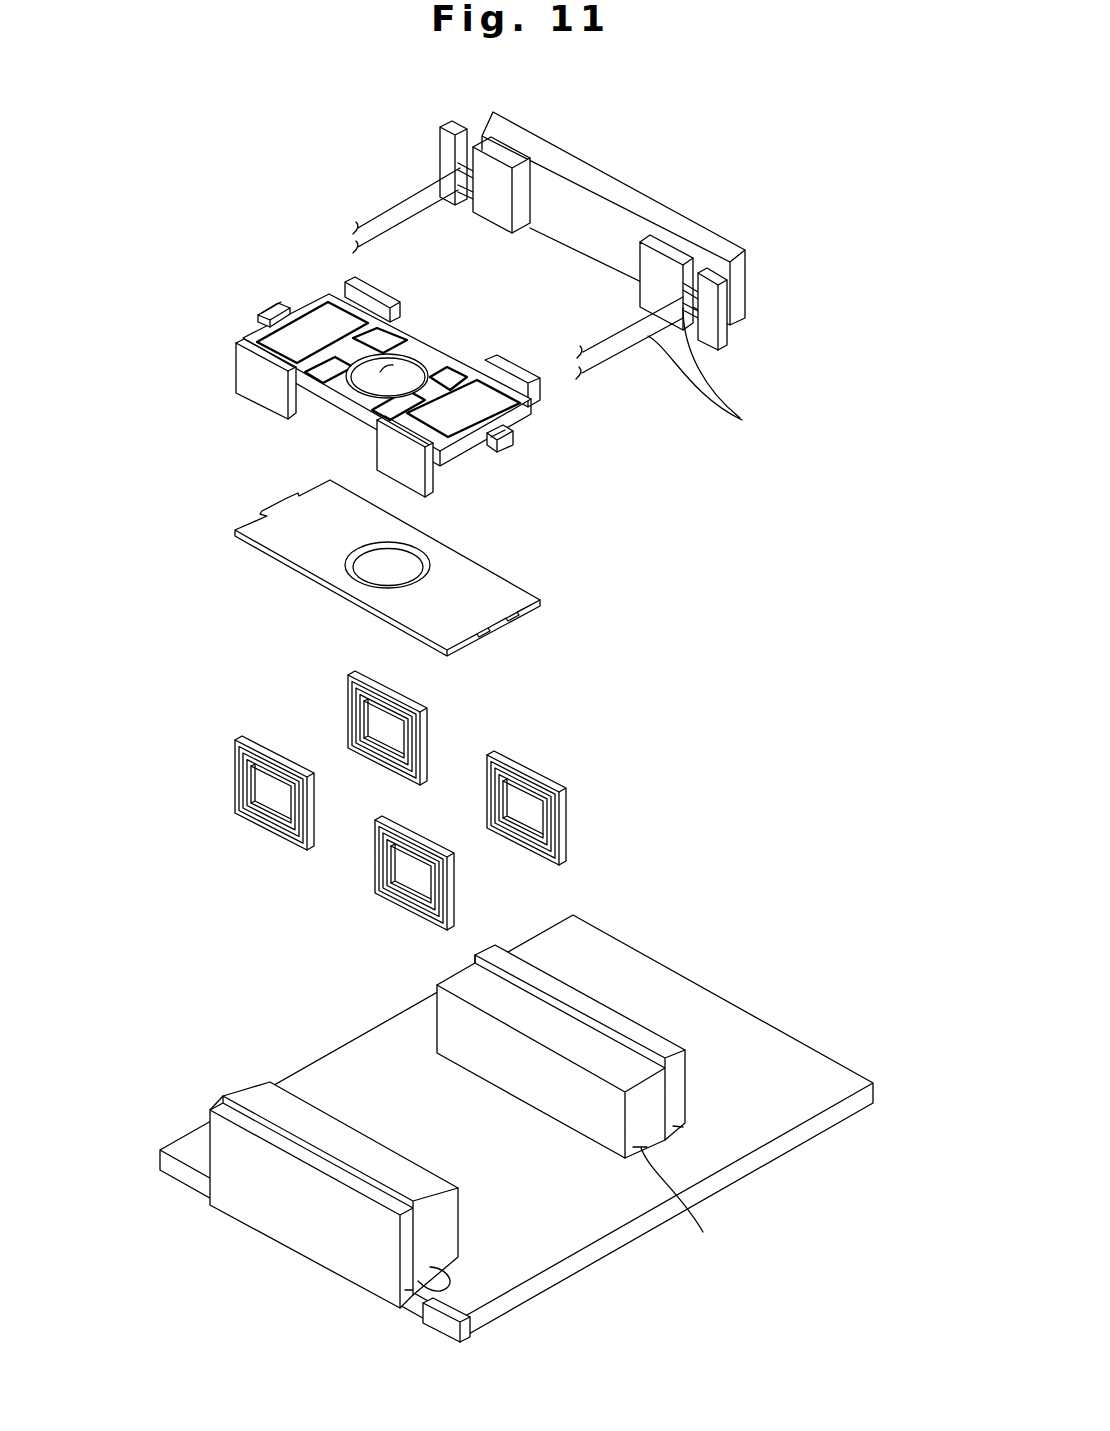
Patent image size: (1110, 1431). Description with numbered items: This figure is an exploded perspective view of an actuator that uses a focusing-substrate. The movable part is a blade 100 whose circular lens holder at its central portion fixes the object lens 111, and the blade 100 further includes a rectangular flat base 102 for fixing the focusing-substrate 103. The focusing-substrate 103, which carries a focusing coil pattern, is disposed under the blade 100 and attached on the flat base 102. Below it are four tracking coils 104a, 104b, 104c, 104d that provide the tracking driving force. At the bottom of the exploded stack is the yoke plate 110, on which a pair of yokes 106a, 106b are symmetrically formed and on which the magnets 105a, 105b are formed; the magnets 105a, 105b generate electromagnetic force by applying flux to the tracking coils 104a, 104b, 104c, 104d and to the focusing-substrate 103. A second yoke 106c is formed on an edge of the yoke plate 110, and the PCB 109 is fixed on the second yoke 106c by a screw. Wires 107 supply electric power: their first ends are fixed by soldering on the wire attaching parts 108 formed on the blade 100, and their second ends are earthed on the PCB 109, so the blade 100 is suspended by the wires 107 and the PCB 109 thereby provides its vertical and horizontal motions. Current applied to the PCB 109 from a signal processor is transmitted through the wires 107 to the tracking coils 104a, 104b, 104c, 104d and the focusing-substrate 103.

The blade 100 is at (307, 302).
The flat base 102 is at (283, 338).
The focusing-substrate 103 is at (513, 593).
The tracking coil 104a is at (426, 730).
The tracking coil 104b is at (517, 767).
The tracking coil 104c is at (262, 757).
The tracking coil 104d is at (452, 918).
The magnet 105a is at (692, 1196).
The magnet 105b is at (432, 1270).
The yoke 106a is at (680, 1128).
The yoke 106b is at (360, 1283).
The second yoke 106c is at (720, 315).
The wires 107 is at (674, 365).
The wire attaching parts 108 is at (511, 448).
The PCB 109 is at (702, 235).
The yoke plate 110 is at (483, 1298).
The object lens 111 is at (407, 368).